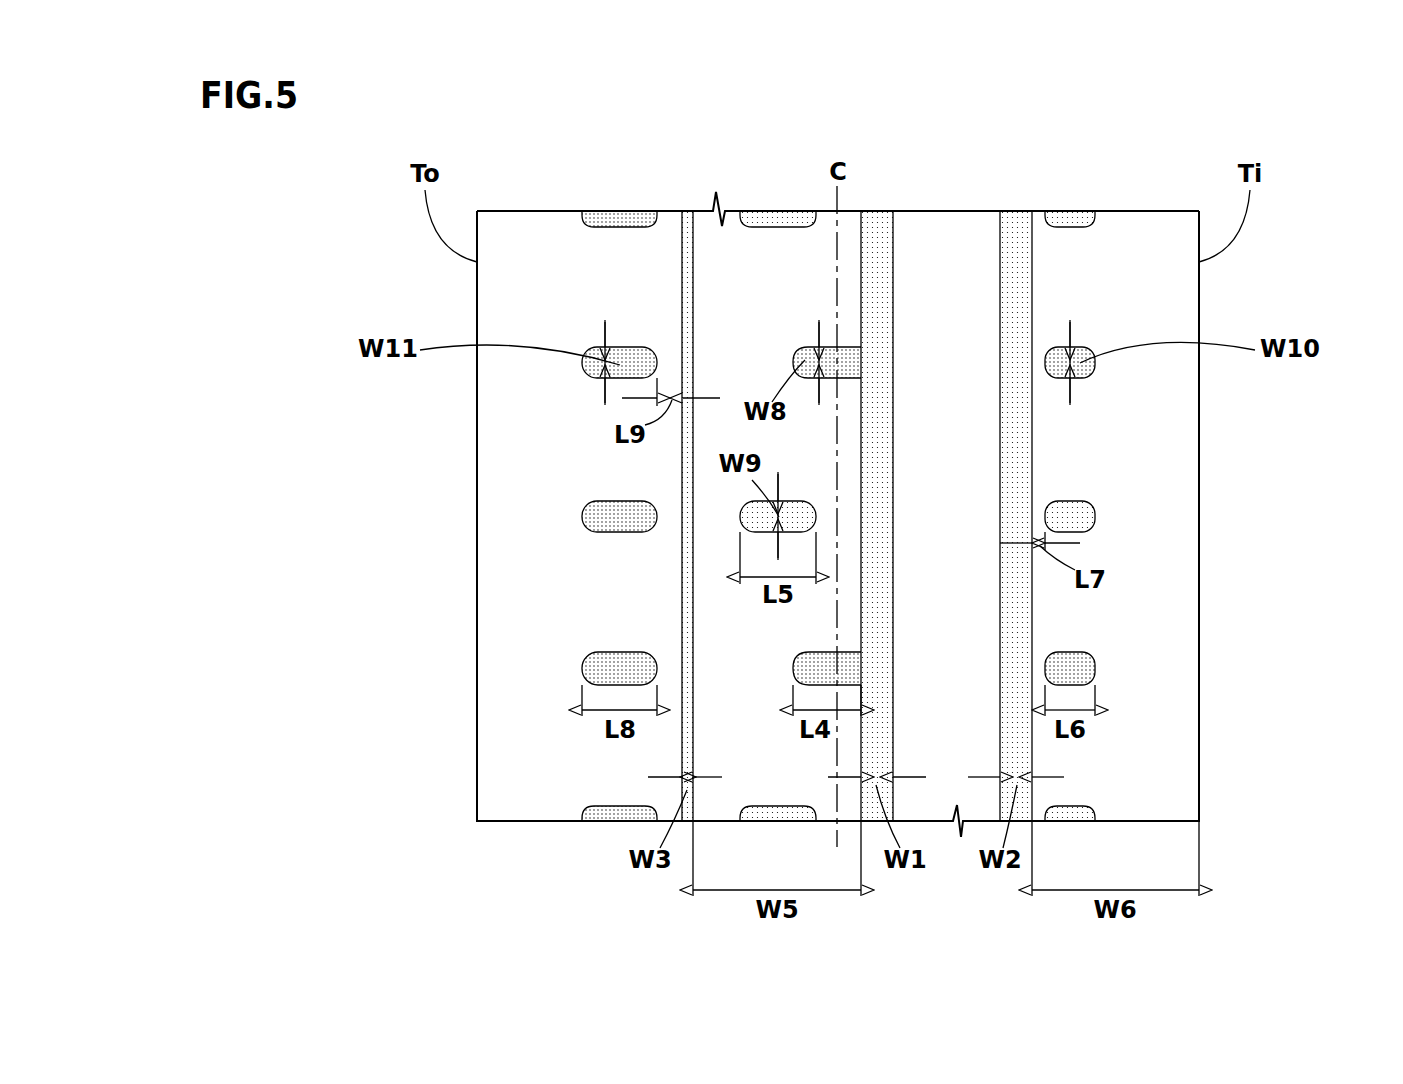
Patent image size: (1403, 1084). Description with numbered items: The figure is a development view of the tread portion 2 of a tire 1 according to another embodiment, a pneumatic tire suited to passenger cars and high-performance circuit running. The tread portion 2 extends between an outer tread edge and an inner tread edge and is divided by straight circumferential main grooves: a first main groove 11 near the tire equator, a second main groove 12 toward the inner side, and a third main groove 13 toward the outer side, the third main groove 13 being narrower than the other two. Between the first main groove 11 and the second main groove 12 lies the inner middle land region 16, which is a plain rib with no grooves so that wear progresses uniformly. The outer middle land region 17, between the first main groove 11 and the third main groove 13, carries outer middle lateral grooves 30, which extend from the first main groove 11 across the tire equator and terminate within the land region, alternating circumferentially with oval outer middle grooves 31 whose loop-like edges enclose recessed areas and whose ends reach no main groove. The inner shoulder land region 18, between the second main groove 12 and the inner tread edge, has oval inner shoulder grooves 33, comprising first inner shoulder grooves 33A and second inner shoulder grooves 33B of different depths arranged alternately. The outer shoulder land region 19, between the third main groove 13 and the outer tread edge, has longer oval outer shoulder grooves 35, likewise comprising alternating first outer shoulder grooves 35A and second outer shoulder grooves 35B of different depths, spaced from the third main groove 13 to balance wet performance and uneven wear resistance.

The tire 1 is at (1063, 202).
The tread portion 2 is at (737, 195).
The first main groove 11 is at (874, 258).
The second main groove 12 is at (1012, 258).
The third main groove 13 is at (685, 265).
The inner middle land region 16 is at (938, 258).
The outer middle land region 17 is at (771, 258).
The inner shoulder land region 18 is at (1128, 258).
The outer shoulder land region 19 is at (545, 258).
The outer middle lateral groove 30 is at (852, 358).
The outer middle groove 31 is at (745, 512).
The inner shoulder groove 33 is at (1305, 385).
The first inner shoulder groove 33A is at (1082, 515).
The second inner shoulder groove 33B is at (1090, 370).
The outer shoulder groove 35 is at (630, 355).
The first outer shoulder groove 35A is at (610, 667).
The second outer shoulder groove 35B is at (610, 517).